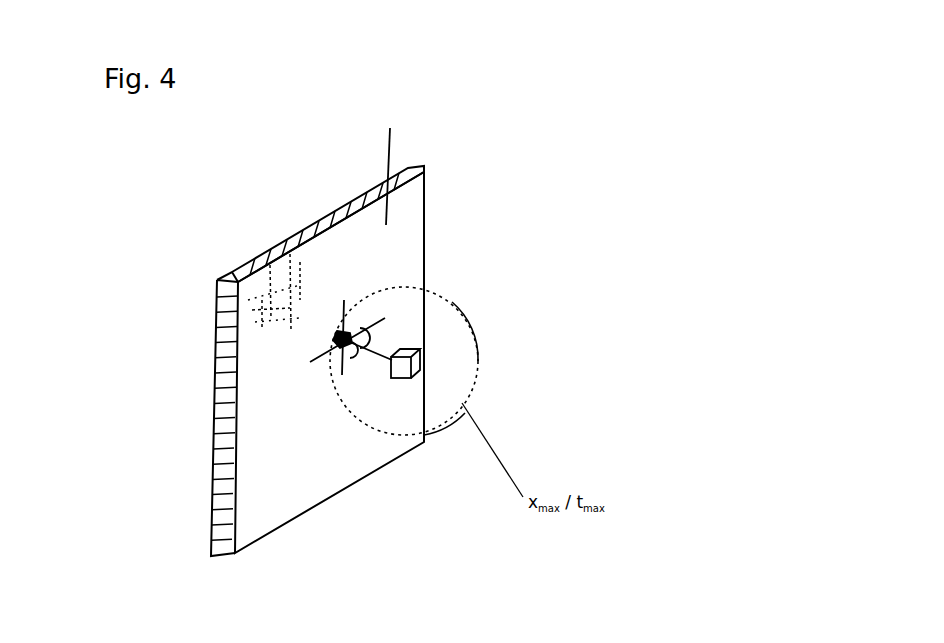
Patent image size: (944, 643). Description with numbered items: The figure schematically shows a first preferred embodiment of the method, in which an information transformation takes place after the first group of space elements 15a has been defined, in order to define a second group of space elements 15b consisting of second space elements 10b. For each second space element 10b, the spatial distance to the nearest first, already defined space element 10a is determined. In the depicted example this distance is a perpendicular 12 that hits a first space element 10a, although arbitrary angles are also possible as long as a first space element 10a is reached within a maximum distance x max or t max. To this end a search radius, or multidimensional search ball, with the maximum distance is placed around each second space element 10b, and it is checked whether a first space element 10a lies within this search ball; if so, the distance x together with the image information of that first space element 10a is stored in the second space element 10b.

The first space element 10a is at (255, 308).
The second space element 10b is at (420, 358).
The perpendicular 12 is at (377, 353).
The first group of space elements 15a is at (399, 158).
The second group of space elements 15b is at (472, 386).